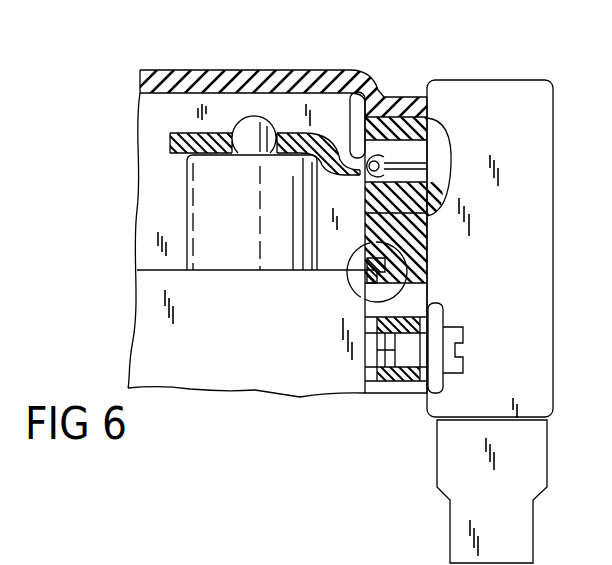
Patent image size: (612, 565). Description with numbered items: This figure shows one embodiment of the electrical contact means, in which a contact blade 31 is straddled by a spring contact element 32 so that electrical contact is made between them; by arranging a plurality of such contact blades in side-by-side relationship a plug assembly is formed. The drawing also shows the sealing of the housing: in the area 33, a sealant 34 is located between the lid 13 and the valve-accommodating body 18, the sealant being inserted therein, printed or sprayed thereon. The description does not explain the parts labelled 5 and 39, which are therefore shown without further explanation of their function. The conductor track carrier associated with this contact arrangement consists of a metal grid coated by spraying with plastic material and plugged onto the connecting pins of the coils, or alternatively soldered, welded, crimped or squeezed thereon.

The lid 13 is at (205, 72).
The cylindrical member 5 is at (187, 191).
The valve-accommodating body 18 is at (192, 390).
The spring contact element 32 is at (354, 93).
The contact blade 31 is at (438, 148).
The area 33 is at (352, 287).
The sealant 34 is at (375, 272).
The lower extension 39 is at (416, 492).